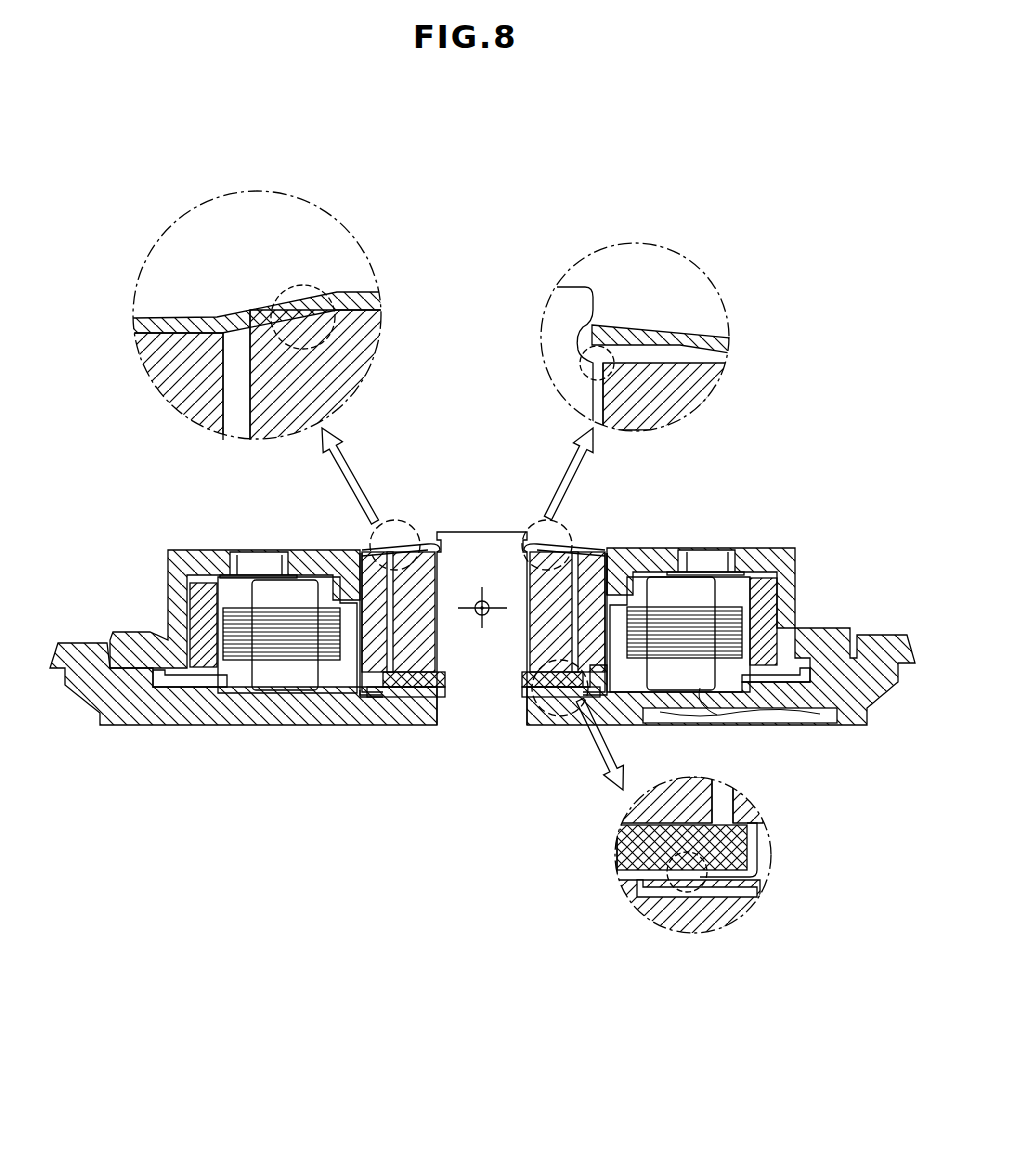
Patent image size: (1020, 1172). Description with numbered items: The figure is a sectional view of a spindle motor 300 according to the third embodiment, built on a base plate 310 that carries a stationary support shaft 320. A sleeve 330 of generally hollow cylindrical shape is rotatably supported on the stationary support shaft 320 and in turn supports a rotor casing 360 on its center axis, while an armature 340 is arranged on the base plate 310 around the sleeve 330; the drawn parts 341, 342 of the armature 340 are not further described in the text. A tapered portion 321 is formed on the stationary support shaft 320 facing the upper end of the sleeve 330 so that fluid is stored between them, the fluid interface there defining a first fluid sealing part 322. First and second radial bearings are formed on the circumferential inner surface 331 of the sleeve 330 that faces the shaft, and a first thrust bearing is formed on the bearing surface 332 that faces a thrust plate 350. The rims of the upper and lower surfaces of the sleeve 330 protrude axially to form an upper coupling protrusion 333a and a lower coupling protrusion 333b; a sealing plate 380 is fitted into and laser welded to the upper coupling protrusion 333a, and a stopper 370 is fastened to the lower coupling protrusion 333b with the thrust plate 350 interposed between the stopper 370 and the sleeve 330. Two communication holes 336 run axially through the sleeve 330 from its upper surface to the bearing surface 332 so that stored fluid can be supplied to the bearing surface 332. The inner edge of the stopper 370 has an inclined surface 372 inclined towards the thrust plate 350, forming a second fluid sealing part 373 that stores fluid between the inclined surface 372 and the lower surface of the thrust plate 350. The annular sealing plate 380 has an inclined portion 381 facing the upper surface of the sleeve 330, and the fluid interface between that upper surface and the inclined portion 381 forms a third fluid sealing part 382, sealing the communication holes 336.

The spindle motor 300 is at (82, 122).
The base plate 310 is at (145, 738).
The stationary support shaft 320 is at (482, 703).
The tapered portion 321 is at (583, 327).
The first fluid sealing part 322 is at (578, 363).
The sleeve 330 is at (358, 593).
The circumferential inner surface 331 is at (578, 563).
The bearing surface 332 is at (690, 812).
The upper coupling protrusion 333a is at (143, 323).
The lower coupling protrusion 333b is at (368, 697).
The communication holes 336 is at (608, 595).
The armature 340 is at (467, 715).
The coil 341 is at (243, 648).
The bobbin 342 is at (286, 680).
The thrust plate 350 is at (419, 690).
The rotor casing 360 is at (185, 545).
The stopper 370 is at (727, 891).
The inclined surface 372 is at (637, 881).
The second fluid sealing part 373 is at (690, 890).
The sealing plate 380 is at (358, 287).
The inclined portion 381 is at (260, 310).
The third fluid sealing part 382 is at (300, 283).